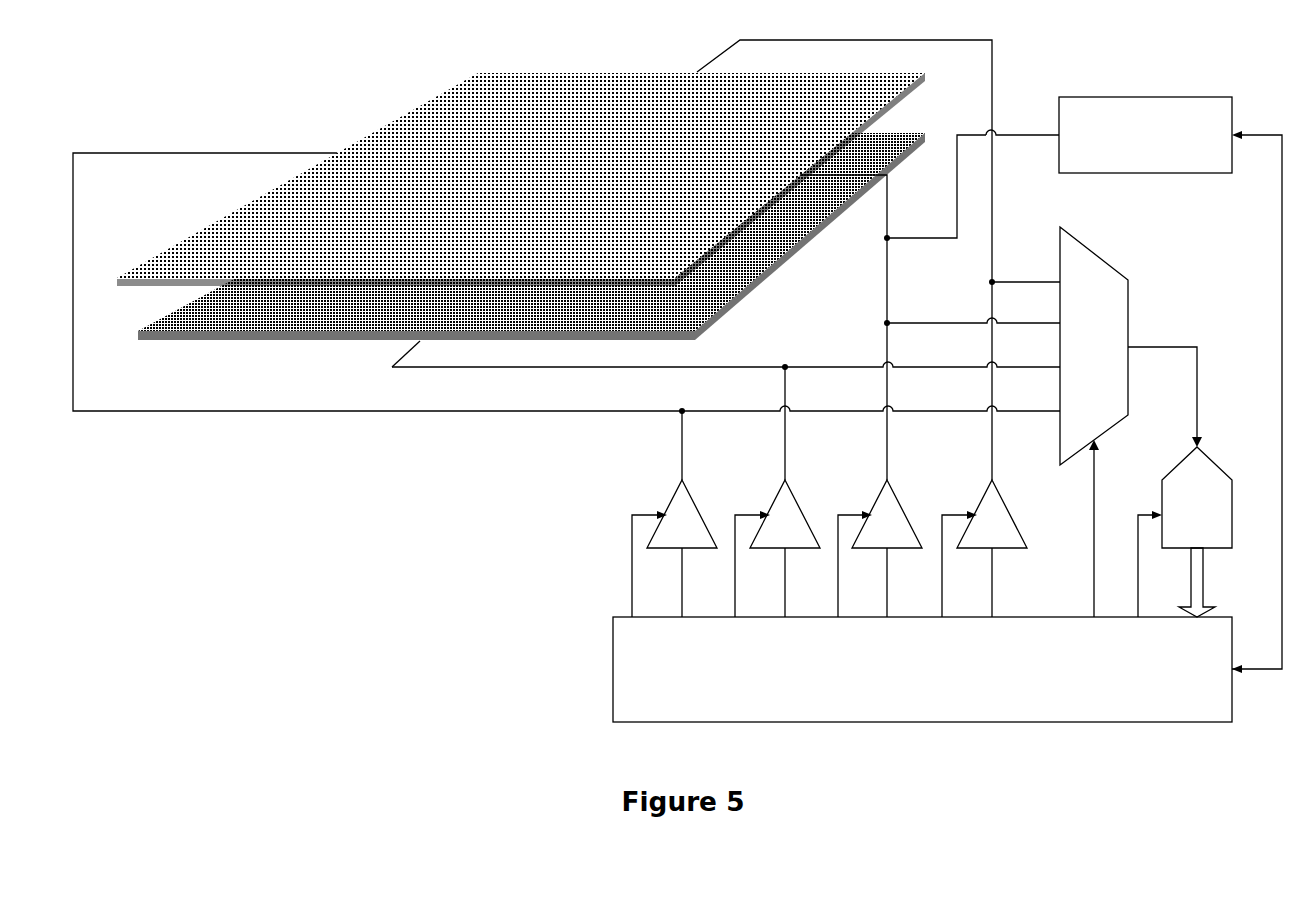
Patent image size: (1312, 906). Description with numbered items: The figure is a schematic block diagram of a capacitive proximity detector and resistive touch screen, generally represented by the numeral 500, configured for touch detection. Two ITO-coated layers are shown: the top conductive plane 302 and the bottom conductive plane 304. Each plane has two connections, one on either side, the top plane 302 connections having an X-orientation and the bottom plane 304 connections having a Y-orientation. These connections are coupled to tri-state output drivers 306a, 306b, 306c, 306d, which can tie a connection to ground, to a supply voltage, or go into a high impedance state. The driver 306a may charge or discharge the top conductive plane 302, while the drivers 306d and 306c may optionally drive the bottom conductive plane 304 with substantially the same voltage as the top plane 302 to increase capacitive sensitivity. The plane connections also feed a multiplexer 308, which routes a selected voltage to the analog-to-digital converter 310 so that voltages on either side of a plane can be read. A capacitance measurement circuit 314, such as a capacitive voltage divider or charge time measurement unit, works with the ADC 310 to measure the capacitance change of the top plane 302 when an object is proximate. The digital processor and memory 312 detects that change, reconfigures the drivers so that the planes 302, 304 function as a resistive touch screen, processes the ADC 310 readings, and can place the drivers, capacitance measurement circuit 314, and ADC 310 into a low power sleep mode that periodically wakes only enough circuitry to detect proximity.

The top conductive plane 302 is at (444, 94).
The bottom conductive plane 304 is at (168, 341).
The driver 306a is at (674, 500).
The driver 306b is at (880, 500).
The driver 306c is at (984, 500).
The driver 306d is at (777, 500).
The multiplexer 308 is at (1093, 254).
The analog-to-digital converter 310 is at (1215, 461).
The digital processor and memory 312 is at (613, 617).
The capacitance measurement circuit 314 is at (1181, 96).
The resistive touch screen 500 is at (302, 567).